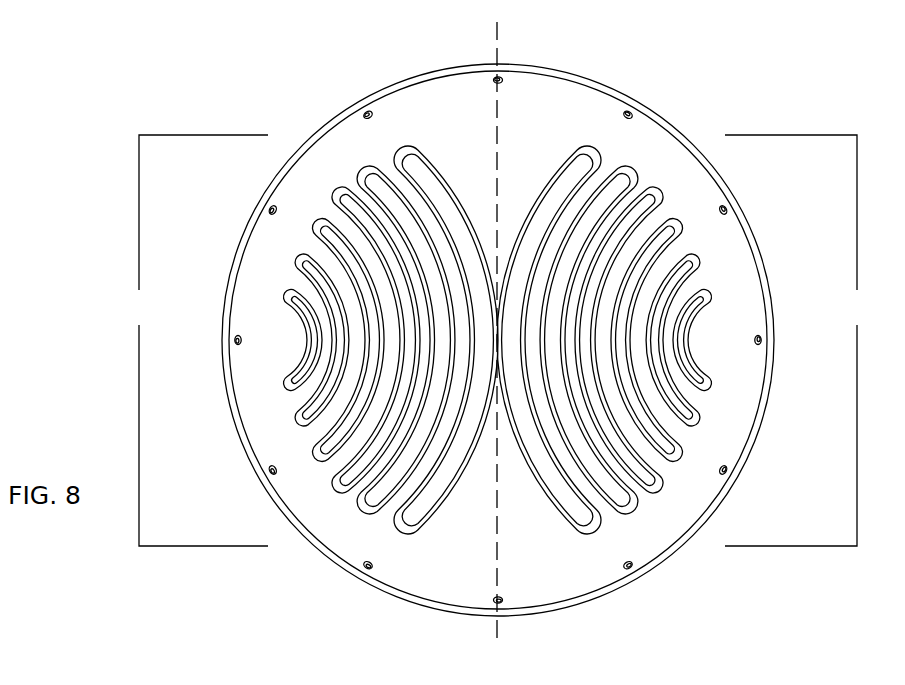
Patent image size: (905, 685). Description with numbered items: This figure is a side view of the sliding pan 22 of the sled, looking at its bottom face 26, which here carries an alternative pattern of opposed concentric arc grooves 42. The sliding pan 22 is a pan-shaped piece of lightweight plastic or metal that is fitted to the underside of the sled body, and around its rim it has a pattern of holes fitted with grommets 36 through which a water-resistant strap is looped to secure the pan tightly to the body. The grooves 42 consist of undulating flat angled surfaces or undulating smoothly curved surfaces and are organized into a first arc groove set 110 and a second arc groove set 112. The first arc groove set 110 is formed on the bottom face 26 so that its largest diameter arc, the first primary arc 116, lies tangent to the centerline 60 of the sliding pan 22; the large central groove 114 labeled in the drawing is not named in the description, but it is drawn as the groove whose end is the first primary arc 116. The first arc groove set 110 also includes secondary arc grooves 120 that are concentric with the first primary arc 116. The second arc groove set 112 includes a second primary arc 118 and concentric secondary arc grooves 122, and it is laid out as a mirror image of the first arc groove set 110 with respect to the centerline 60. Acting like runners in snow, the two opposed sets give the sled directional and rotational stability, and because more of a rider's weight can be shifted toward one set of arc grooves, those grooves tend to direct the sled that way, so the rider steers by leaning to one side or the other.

The sliding pan 22 is at (733, 250).
The bottom face 26 is at (519, 170).
The grommets 36 is at (733, 201).
The opposed concentric arc grooves 42 is at (320, 522).
The centerline 60 is at (506, 38).
The first arc groove set 110 is at (197, 340).
The second arc groove set 112 is at (800, 340).
The central rib 114 is at (462, 210).
The first primary arc 116 is at (400, 148).
The second primary arc 118 is at (594, 149).
The secondary arc grooves 120 is at (317, 221).
The secondary arc grooves 122 is at (676, 220).